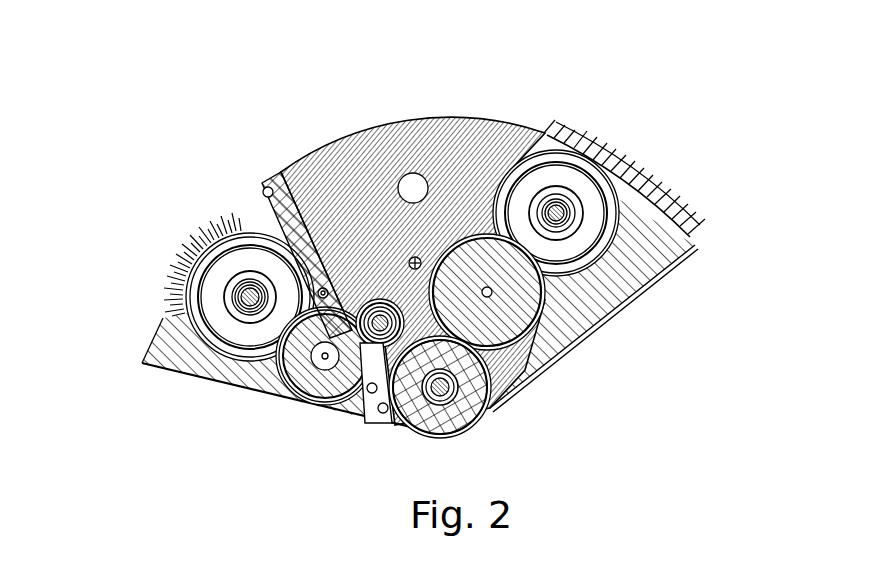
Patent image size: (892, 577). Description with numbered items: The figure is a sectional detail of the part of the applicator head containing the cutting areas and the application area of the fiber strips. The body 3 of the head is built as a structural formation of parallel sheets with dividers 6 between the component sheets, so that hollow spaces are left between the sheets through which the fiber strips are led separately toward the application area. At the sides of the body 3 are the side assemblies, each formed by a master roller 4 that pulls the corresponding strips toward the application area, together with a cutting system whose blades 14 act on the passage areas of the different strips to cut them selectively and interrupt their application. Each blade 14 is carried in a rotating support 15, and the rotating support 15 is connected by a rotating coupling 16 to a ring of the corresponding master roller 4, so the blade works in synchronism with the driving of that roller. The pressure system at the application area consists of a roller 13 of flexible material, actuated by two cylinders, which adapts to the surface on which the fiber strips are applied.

The body 3 is at (337, 177).
The master roller 4 is at (212, 235).
The dividers 6 is at (283, 213).
The roller 13 is at (462, 407).
The blades 14 is at (300, 350).
The rotating supports 15 is at (513, 308).
The rotating coupling 16 is at (213, 313).